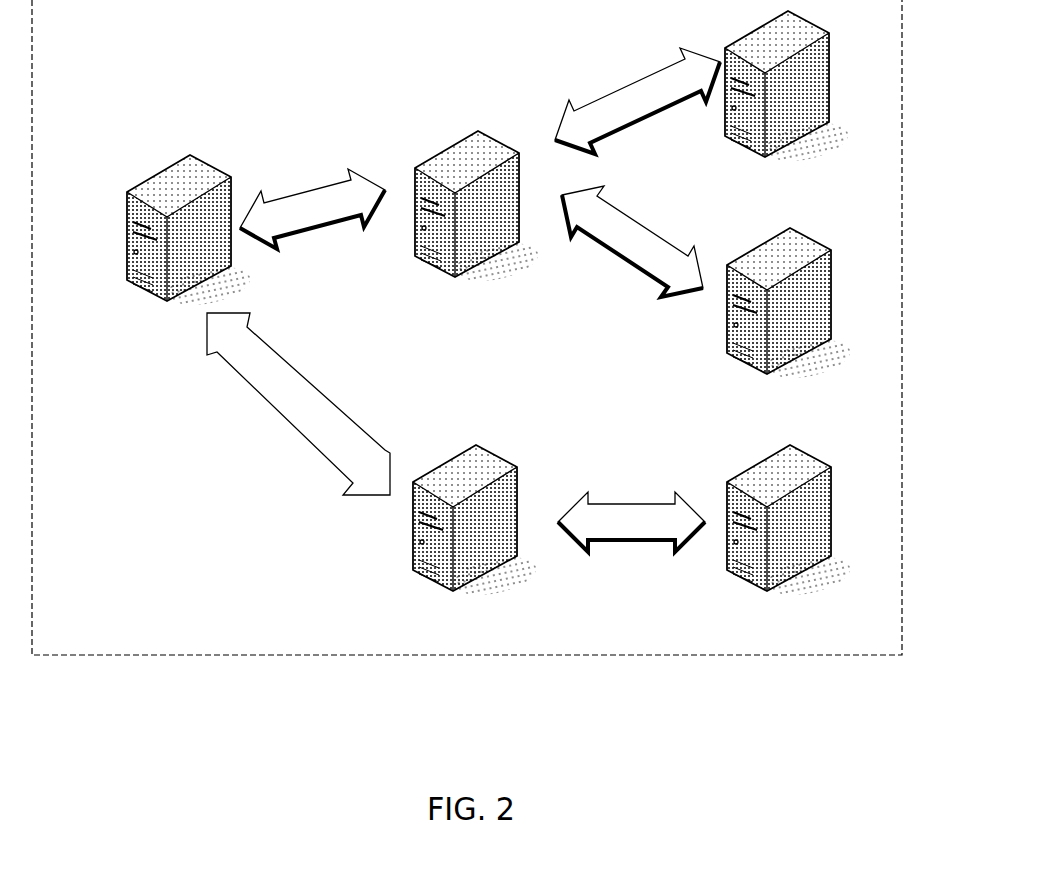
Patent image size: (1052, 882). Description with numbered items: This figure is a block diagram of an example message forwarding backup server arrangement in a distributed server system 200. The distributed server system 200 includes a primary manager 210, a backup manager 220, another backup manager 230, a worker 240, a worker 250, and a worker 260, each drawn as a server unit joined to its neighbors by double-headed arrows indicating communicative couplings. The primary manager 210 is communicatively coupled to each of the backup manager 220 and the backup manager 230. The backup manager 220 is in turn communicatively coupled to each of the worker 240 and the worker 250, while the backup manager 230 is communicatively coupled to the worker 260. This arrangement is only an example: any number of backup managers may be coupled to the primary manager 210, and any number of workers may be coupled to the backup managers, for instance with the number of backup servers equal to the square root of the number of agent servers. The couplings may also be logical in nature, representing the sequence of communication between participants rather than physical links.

The distributed server system 200 is at (468, 655).
The primary manager 210 is at (180, 225).
The backup manager 220 is at (468, 205).
The backup manager 230 is at (468, 517).
The worker 240 is at (777, 90).
The worker 250 is at (778, 302).
The worker 260 is at (778, 520).